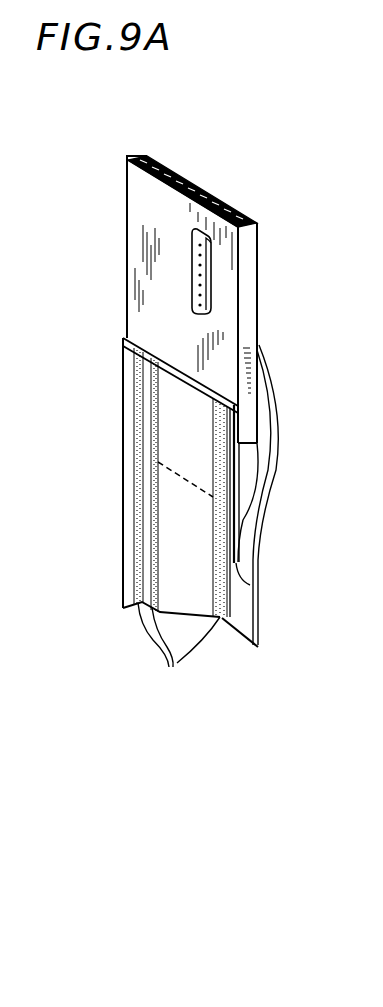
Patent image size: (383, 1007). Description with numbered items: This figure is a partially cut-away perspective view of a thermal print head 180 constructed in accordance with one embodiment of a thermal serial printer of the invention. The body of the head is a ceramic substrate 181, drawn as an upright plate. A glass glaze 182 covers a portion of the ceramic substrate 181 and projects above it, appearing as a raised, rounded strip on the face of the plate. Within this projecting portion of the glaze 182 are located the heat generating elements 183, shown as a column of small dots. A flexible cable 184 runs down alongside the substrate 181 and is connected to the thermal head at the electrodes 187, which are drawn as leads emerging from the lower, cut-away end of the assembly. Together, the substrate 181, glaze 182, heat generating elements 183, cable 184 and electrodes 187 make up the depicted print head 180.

The print head 180 is at (101, 372).
The ceramic substrate 181 is at (245, 295).
The glass glaze 182 is at (212, 311).
The heat generating elements 183 is at (205, 266).
The flexible cable 184 is at (250, 585).
The electrodes 187 is at (179, 653).